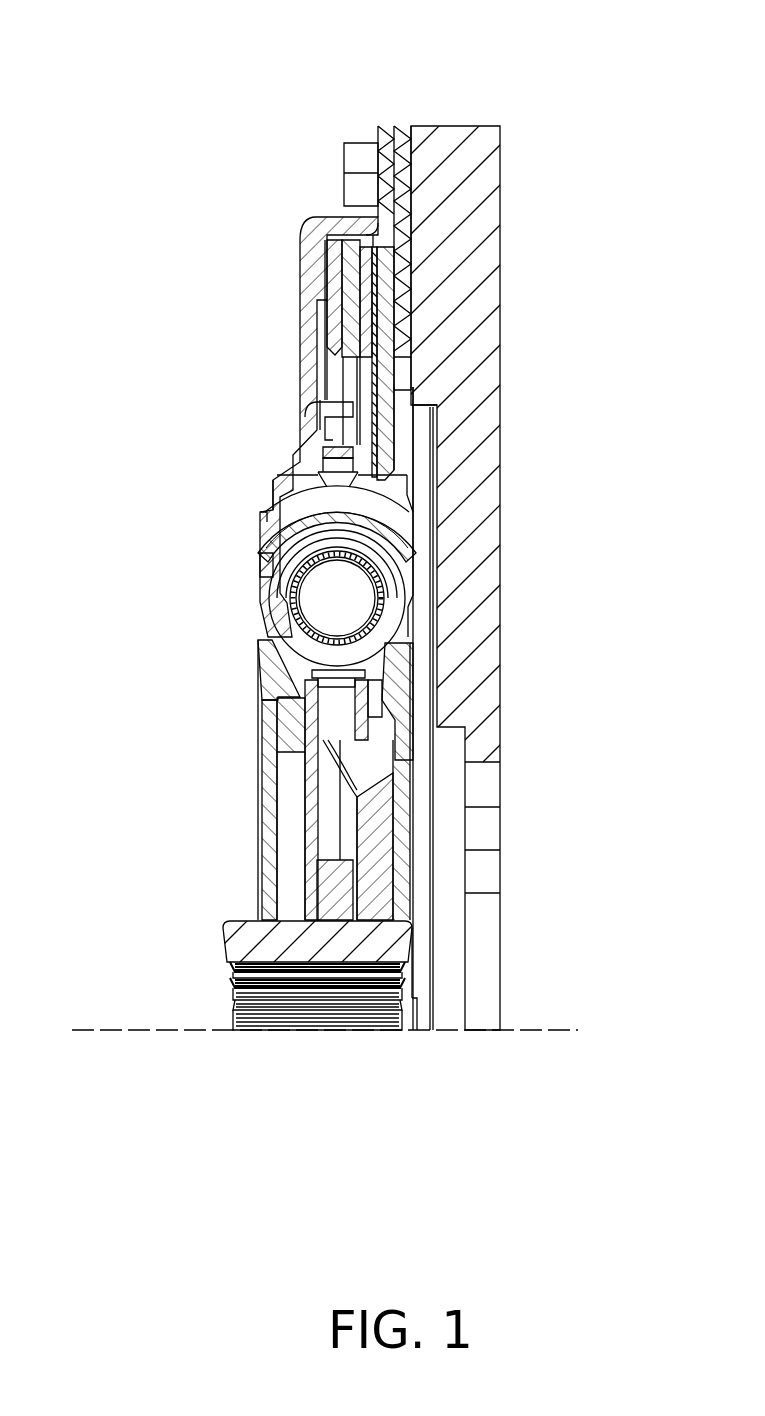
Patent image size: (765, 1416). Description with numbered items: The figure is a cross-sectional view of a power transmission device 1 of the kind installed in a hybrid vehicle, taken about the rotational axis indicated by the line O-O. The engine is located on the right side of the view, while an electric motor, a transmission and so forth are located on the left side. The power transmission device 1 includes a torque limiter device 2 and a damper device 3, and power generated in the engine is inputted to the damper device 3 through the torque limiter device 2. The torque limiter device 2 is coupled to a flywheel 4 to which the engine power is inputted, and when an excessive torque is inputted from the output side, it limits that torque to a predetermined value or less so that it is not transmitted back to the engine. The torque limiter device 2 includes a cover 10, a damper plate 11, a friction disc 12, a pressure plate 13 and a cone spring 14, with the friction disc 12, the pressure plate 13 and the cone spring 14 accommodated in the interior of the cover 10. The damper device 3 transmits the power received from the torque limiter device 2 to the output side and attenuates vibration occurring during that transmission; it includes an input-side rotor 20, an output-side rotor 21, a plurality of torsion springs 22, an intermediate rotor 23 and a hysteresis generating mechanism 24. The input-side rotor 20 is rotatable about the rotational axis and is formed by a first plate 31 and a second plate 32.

The power transmission device 1 is at (617, 124).
The torque limiter device 2 is at (268, 248).
The damper device 3 is at (220, 537).
The flywheel 4 is at (483, 335).
The cover 10 is at (308, 221).
The damper plate 11 is at (403, 170).
The friction disc 12 is at (396, 283).
The pressure plate 13 is at (327, 363).
The cone spring 14 is at (333, 307).
The input-side rotor 20 is at (257, 740).
The output-side rotor 21 is at (293, 913).
The torsion springs 22 is at (295, 609).
The intermediate rotor 23 is at (372, 775).
The hysteresis generating mechanism 24 is at (293, 762).
The first plate 31 is at (262, 690).
The second plate 32 is at (390, 445).